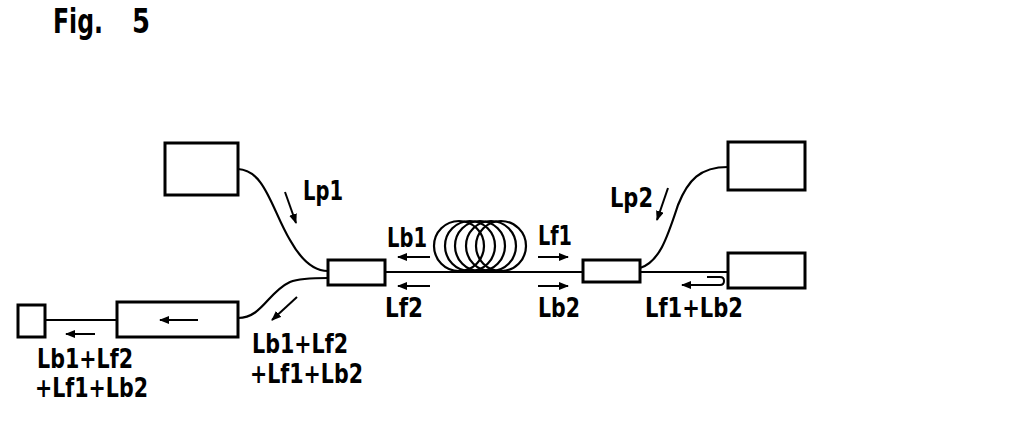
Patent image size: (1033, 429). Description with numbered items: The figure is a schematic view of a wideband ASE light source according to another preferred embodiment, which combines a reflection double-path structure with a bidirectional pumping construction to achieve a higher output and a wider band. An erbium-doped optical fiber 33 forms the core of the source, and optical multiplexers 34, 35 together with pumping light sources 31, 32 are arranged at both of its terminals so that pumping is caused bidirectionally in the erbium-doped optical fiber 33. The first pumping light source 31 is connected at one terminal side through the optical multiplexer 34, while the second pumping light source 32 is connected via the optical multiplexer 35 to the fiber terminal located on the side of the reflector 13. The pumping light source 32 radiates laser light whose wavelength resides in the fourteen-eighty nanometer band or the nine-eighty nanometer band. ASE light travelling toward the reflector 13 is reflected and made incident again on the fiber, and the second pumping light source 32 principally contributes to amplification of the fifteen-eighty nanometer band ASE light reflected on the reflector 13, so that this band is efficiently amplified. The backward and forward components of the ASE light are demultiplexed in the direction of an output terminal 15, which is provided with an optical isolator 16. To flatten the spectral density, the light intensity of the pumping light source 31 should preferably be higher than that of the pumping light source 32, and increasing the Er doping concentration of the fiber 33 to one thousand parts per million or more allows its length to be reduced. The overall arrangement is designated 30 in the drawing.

The reflector 13 is at (774, 278).
The output terminal 15 is at (35, 311).
The optical isolator 16 is at (183, 307).
The optical amplifier 30 is at (518, 166).
The first pumping light source 31 is at (197, 148).
The second pumping light source 32 is at (767, 143).
The erbium-doped optical fiber 33 is at (473, 220).
The optical multiplexer 34 is at (348, 270).
The optical multiplexer 35 is at (610, 282).